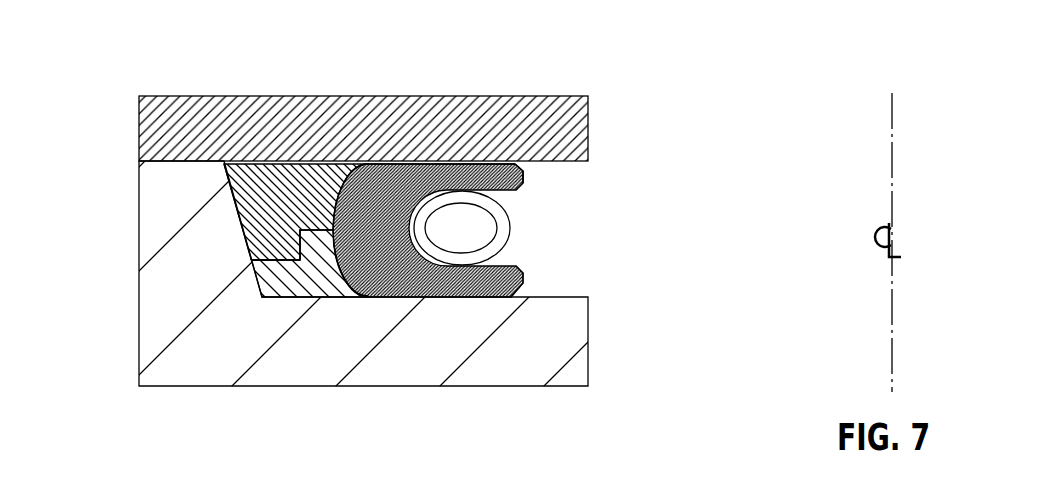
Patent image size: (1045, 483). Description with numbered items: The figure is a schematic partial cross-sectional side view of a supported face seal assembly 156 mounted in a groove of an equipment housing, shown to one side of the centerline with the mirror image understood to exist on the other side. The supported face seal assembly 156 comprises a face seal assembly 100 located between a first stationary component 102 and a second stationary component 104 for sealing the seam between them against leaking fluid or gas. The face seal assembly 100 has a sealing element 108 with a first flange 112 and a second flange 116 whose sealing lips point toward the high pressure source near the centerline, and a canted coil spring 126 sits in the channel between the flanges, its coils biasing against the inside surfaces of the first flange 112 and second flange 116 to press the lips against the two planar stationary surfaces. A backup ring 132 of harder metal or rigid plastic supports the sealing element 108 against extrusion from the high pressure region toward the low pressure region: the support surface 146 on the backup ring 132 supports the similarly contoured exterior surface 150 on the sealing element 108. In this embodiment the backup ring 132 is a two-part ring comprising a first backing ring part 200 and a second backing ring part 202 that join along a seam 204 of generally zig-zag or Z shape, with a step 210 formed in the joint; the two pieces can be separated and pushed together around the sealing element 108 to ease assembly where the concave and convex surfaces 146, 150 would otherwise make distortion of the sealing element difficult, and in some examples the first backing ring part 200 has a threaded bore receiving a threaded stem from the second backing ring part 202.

The face seal assembly 100 is at (496, 232).
The first stationary component 102 is at (587, 128).
The second stationary component 104 is at (575, 360).
The sealing element 108 is at (460, 158).
The first flange 112 is at (495, 166).
The second flange 116 is at (497, 283).
The canted coil spring 126 is at (513, 232).
The backup ring 132 is at (257, 207).
The support surface 146 is at (340, 262).
The exterior surface 150 is at (330, 192).
The supported face seal assembly 156 is at (631, 181).
The first backing ring part 200 is at (266, 178).
The second backing ring part 202 is at (342, 287).
The seam 204 is at (253, 263).
The wedge ring step 210 is at (302, 240).